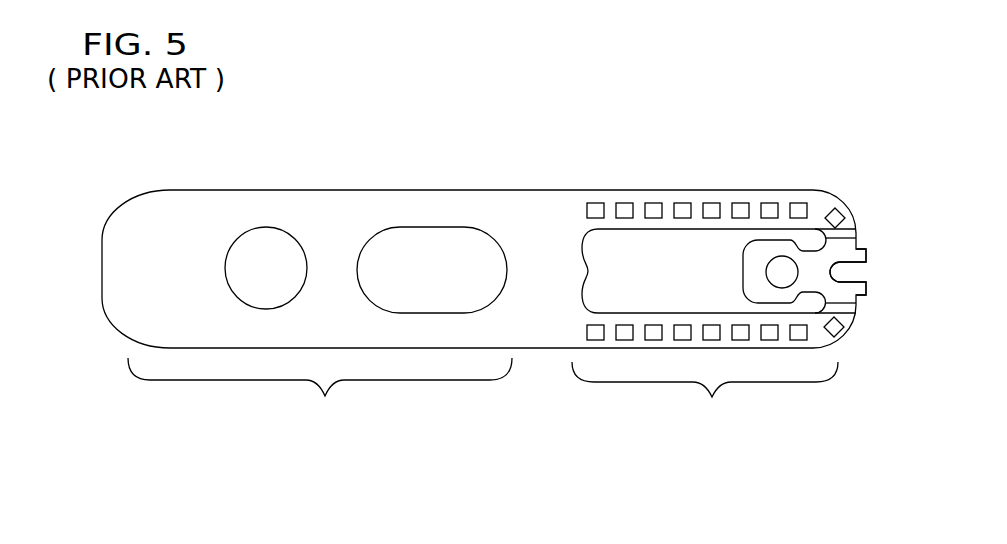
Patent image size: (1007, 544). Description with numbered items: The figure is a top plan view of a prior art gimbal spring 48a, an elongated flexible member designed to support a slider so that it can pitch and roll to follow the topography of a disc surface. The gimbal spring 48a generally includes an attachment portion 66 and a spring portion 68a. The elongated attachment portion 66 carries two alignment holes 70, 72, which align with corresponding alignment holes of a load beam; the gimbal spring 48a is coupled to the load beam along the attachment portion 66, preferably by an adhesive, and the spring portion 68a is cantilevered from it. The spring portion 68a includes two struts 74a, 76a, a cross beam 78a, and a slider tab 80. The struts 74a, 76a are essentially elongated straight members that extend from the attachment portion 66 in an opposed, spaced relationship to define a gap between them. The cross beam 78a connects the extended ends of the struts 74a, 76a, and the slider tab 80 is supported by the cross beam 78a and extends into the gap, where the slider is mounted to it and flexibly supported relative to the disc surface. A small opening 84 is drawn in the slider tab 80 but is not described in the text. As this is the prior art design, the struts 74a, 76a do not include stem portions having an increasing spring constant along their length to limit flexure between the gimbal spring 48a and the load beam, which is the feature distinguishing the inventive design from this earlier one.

The gimbal spring 48a is at (598, 150).
The attachment portion 66 is at (320, 392).
The spring portion 68a is at (705, 395).
The alignment hole 70 is at (262, 227).
The alignment hole 72 is at (455, 227).
The strut 74a is at (681, 199).
The strut 76a is at (698, 341).
The cross beam 78a is at (844, 250).
The slider tab 80 is at (768, 204).
The hole in tab 84 is at (785, 237).